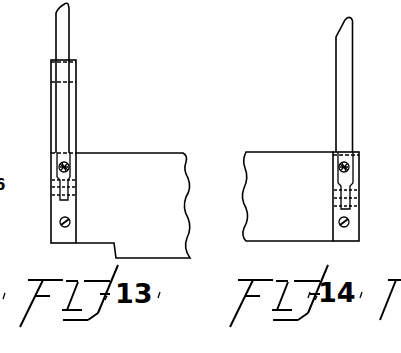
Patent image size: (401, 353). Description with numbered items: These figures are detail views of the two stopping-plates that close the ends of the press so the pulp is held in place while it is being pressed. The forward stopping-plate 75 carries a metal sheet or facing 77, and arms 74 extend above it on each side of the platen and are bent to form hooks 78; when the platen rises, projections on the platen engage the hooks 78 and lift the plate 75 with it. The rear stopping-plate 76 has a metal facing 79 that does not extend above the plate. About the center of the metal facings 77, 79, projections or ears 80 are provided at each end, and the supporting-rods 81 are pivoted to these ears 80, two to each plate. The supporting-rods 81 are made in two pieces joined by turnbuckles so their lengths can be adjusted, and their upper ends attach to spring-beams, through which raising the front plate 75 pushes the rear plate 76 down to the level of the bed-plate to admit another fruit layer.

In FIG. 13, the arms 74 is at (76, 107).
In FIG. 13, the forward stopping-plate 75 is at (135, 158).
In FIG. 14, the rear stopping-plate 76 is at (277, 163).
In FIG. 13, the metal sheet or facing 77 is at (62, 232).
In FIG. 13, the hooks 78 is at (75, 70).
In FIG. 14, the metal facing 79 is at (351, 233).
In FIG. 13, the projections or ears 80 is at (71, 199).
In FIG. 14, the projections or ears 80 is at (355, 190).
In FIG. 13, the supporting-rods 81 is at (62, 92).
In FIG. 14, the supporting-rods 81 is at (347, 93).